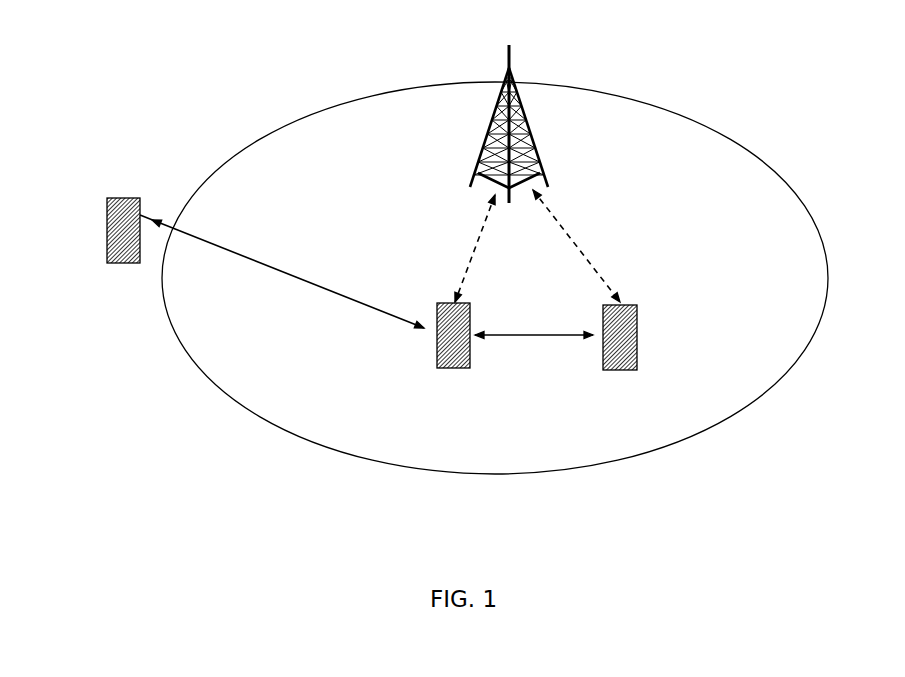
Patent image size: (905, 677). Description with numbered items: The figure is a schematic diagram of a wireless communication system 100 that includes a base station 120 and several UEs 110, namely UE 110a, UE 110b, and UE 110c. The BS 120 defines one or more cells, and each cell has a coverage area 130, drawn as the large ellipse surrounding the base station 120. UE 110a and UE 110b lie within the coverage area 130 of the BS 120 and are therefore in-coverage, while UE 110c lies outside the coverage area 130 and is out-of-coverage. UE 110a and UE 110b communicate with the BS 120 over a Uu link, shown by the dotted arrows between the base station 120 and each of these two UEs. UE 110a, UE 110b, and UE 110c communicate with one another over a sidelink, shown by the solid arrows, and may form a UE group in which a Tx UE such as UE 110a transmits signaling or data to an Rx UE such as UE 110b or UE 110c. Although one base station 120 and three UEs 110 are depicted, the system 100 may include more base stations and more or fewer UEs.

The wireless communication system 100 is at (692, 103).
The UE 110 is at (672, 367).
The UE 110a is at (452, 370).
The UE 110b is at (622, 372).
The UE 110c is at (130, 266).
The base station 120 is at (478, 153).
The coverage area 130 is at (253, 145).